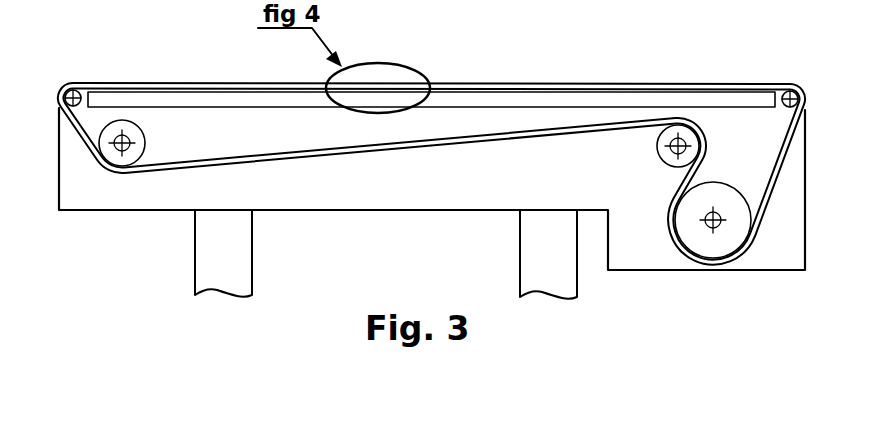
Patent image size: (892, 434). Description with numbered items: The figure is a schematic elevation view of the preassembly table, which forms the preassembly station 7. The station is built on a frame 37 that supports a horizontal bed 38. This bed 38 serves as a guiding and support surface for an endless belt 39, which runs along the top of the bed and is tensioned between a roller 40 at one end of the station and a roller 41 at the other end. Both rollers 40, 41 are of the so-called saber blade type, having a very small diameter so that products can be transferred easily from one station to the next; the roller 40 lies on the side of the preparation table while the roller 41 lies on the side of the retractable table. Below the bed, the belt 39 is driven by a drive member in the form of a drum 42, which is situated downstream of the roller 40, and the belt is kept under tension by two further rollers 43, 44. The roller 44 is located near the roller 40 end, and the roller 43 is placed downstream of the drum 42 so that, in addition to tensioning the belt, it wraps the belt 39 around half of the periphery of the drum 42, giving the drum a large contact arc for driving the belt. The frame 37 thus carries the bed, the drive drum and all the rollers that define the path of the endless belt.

The preassembly station 7 is at (172, 225).
The frame 37 is at (488, 192).
The horizontal bed 38 is at (561, 98).
The endless belt 39 is at (458, 87).
The roller 40 is at (78, 90).
The roller 41 is at (788, 90).
The drum 42 is at (727, 242).
The roller 43 is at (659, 153).
The roller 44 is at (145, 134).